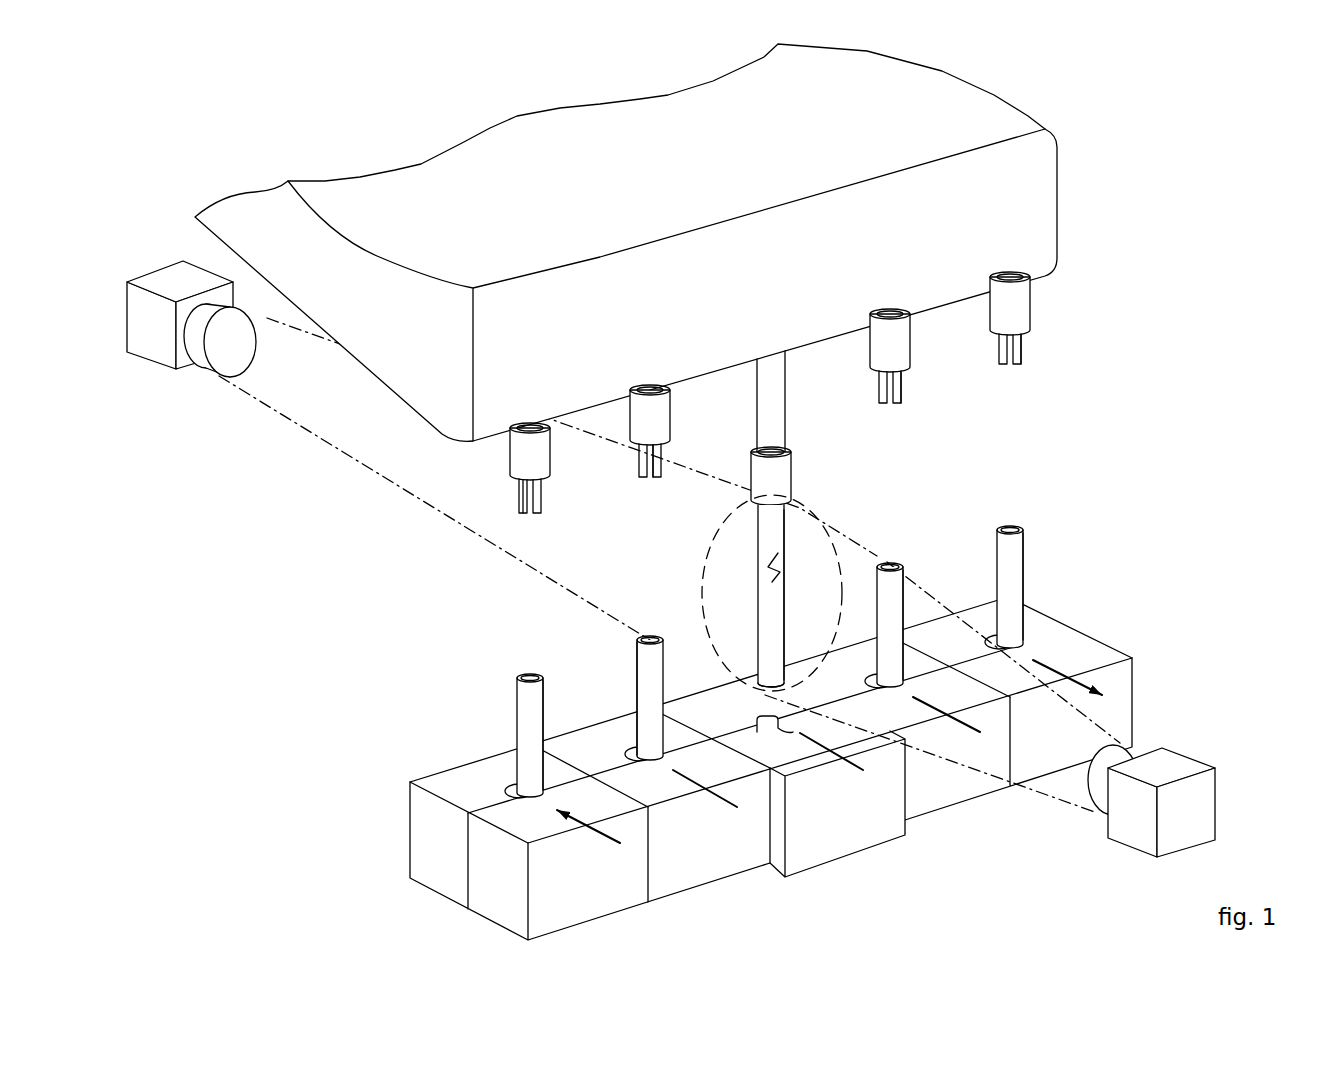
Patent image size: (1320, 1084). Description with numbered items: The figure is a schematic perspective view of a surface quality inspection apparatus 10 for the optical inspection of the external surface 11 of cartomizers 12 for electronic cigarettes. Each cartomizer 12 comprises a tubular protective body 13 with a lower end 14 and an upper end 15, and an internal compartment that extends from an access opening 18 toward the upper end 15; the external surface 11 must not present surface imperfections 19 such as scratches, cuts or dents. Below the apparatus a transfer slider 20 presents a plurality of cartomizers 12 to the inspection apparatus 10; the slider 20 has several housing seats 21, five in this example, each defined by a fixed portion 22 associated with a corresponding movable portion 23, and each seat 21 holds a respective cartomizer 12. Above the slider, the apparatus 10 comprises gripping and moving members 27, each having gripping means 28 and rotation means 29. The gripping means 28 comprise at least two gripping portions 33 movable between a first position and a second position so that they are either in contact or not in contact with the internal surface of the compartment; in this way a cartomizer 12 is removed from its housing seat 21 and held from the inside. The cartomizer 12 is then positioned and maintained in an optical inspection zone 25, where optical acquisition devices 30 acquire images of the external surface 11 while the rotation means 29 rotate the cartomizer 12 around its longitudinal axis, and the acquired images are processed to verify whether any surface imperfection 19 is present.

The surface quality inspection apparatus 10 is at (1188, 272).
The external surface 11 is at (528, 713).
The cartomizer 12 is at (765, 629).
The protective body 13 is at (637, 677).
The lower end 14 is at (763, 693).
The upper end 15 is at (517, 676).
The access opening 18 is at (530, 677).
The surface imperfection 19 is at (760, 570).
The transfer slider 20 is at (747, 780).
The housing seat 21 is at (520, 788).
The fixed portion 22 is at (443, 783).
The movable portion 23 is at (597, 903).
The optical inspection zone 25 is at (827, 523).
The gripping and moving member 27 is at (786, 394).
The gripping means 28 is at (753, 447).
The rotation means 29 is at (528, 453).
The optical acquisition device 30 is at (172, 290).
The gripping portion 33 is at (523, 498).